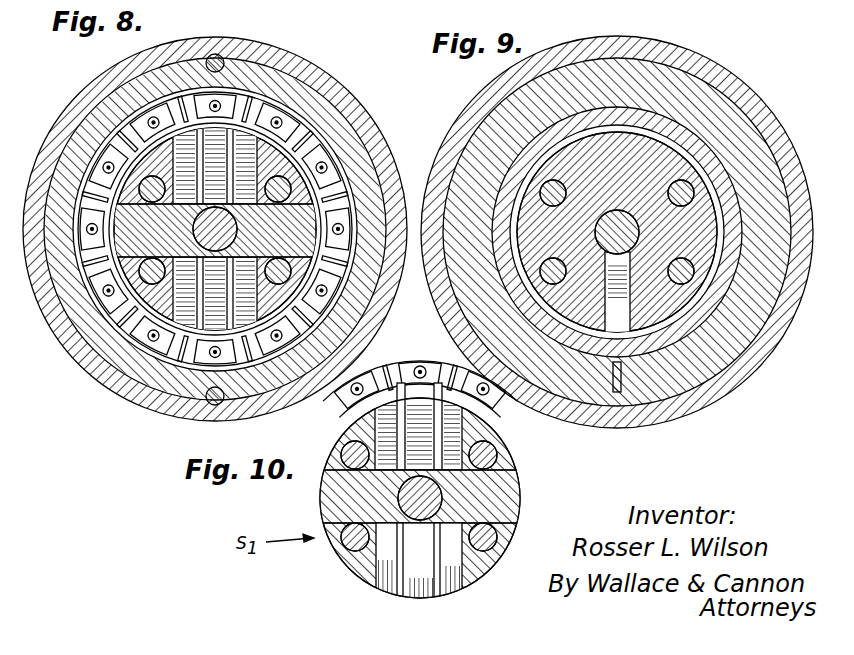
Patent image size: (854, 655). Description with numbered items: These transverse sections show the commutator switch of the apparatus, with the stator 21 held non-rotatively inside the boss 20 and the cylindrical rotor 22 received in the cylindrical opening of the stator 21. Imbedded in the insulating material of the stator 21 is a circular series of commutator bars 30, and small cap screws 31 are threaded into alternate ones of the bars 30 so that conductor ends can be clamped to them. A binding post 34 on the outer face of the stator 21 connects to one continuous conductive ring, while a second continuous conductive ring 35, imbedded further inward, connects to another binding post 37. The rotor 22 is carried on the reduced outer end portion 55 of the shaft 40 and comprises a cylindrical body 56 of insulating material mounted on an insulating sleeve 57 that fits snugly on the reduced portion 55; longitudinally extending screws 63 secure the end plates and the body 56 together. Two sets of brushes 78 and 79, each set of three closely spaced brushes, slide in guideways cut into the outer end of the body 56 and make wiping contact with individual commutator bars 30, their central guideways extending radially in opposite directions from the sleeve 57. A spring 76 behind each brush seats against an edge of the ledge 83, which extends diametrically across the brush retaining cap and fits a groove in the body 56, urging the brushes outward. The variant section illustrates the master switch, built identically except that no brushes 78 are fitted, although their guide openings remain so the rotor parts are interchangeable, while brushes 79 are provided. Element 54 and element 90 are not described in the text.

In FIG. 8, the boss 20 is at (283, 54).
In FIG. 9, the boss 20 is at (657, 46).
In FIG. 8, the stator 21 is at (326, 96).
In FIG. 9, the stator 21 is at (476, 126).
In FIG. 8, the rotor 22 is at (84, 122).
In FIG. 9, the rotor 22 is at (700, 400).
In FIG. 10, the rotor 22 is at (316, 504).
In FIG. 8, the commutator bars 30 is at (343, 138).
In FIG. 10, the commutator bars 30 is at (433, 362).
In FIG. 8, the cap screws 31 is at (344, 252).
In FIG. 8, the binding post 34 is at (218, 55).
In FIG. 9, the conductive ring 35 is at (657, 112).
In FIG. 8, the binding post 37 is at (215, 406).
In FIG. 8, the shaft 40 is at (265, 232).
In FIG. 9, the shaft 40 is at (617, 210).
In FIG. 10, the shaft 40 is at (485, 509).
In FIG. 8, the block portion 54 is at (260, 250).
In FIG. 8, the reduced outer end portion 55 is at (188, 229).
In FIG. 9, the reduced outer end portion 55 is at (595, 232).
In FIG. 10, the reduced outer end portion 55 is at (398, 498).
In FIG. 8, the cylindrical body 56 is at (80, 142).
In FIG. 9, the cylindrical body 56 is at (740, 300).
In FIG. 10, the cylindrical body 56 is at (495, 446).
In FIG. 8, the insulating sleeve 57 is at (260, 214).
In FIG. 9, the insulating sleeve 57 is at (632, 258).
In FIG. 10, the insulating sleeve 57 is at (419, 565).
In FIG. 8, the screws 63 is at (225, 230).
In FIG. 9, the screws 63 is at (567, 193).
In FIG. 10, the screws 63 is at (340, 455).
In FIG. 8, the spring 76 is at (215, 230).
In FIG. 10, the spring 76 is at (420, 496).
In FIG. 8, the brushes 78 is at (254, 345).
In FIG. 8, the brushes 79 is at (196, 118).
In FIG. 10, the brushes 79 is at (380, 426).
In FIG. 8, the ledge 83 is at (92, 232).
In FIG. 10, the ledge 83 is at (520, 500).
In FIG. 8, the block portion 90 is at (180, 243).
In FIG. 10, the block portion 90 is at (475, 489).